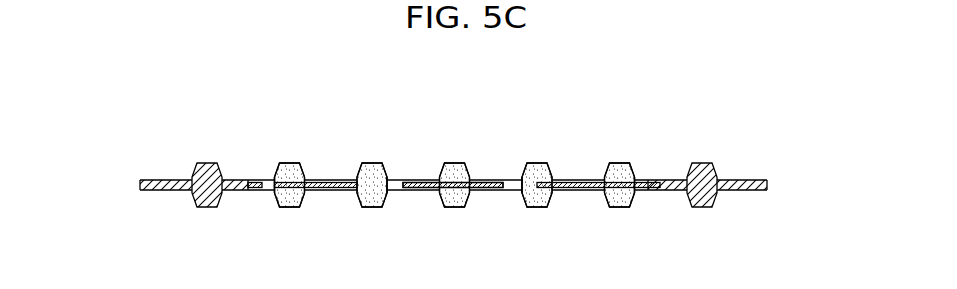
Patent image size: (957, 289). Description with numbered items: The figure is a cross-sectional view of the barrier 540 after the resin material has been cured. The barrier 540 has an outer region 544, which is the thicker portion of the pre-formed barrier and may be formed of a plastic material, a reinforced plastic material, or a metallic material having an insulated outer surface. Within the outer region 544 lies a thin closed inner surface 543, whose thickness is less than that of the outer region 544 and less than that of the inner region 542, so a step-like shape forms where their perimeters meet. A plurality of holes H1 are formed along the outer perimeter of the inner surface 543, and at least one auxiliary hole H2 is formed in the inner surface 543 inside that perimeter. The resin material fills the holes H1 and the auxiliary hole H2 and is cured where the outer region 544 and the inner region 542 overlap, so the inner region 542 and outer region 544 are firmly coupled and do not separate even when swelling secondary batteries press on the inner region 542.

The barrier 540 is at (453, 176).
The inner region 542 is at (597, 183).
The inner surface 543 is at (482, 182).
The outer region 544 is at (744, 180).
The hole H1 is at (268, 190).
The auxiliary hole H2 is at (521, 184).